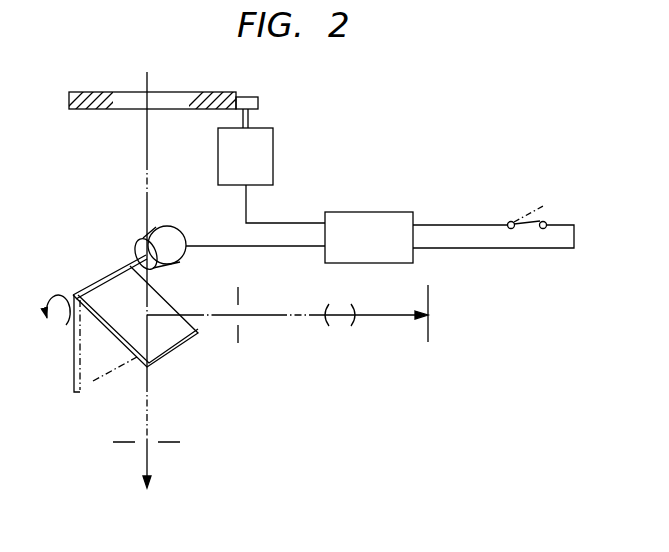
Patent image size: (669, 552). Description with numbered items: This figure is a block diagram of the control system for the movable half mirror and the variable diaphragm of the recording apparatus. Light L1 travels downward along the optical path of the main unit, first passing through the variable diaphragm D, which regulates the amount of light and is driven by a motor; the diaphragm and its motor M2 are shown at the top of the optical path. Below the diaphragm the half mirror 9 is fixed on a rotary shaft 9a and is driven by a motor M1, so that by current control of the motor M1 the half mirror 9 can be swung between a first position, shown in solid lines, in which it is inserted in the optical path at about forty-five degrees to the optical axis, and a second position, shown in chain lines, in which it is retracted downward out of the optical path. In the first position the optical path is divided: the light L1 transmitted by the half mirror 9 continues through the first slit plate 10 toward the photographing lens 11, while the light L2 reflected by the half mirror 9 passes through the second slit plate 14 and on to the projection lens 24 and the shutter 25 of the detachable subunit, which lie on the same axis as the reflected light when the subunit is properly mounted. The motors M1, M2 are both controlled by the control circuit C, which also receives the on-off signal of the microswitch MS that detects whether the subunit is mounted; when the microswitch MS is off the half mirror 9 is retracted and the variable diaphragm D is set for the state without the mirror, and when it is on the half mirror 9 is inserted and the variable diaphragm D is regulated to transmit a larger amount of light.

The variable diaphragm D is at (208, 92).
The motor M2 is at (274, 131).
The motor M1 is at (167, 229).
The control circuit C is at (369, 237).
The microswitch MS is at (549, 222).
The light L1 is at (171, 401).
The light reflected by the half mirror L2 is at (288, 298).
The half mirror 9 is at (170, 342).
The shaft 9a is at (103, 278).
The second slit plate 14 is at (239, 340).
The projection lens 24 is at (338, 326).
The shutter 25 is at (430, 331).
The first slit plate 10 is at (176, 444).
The photographing lens 11 is at (151, 505).